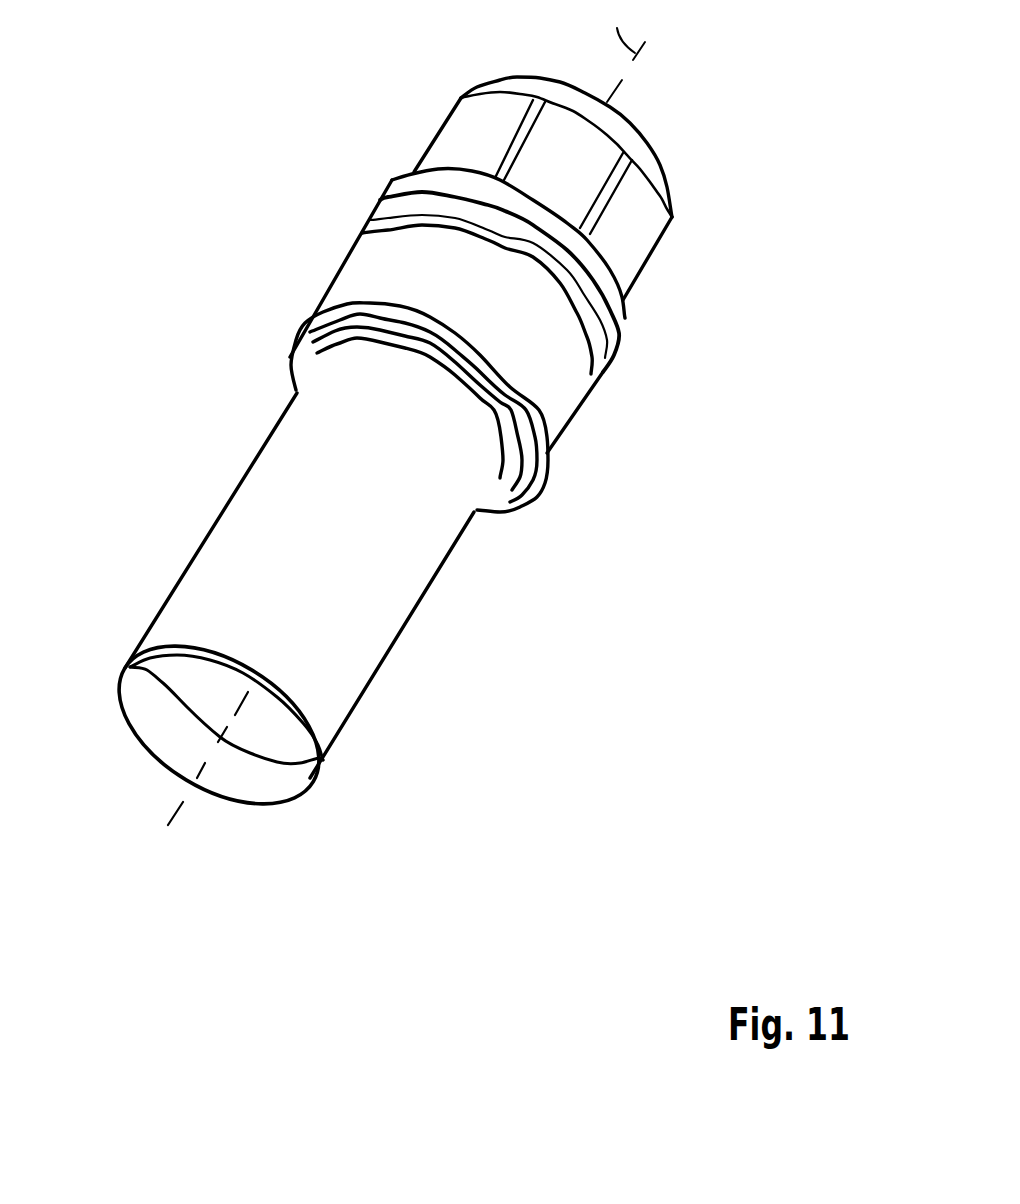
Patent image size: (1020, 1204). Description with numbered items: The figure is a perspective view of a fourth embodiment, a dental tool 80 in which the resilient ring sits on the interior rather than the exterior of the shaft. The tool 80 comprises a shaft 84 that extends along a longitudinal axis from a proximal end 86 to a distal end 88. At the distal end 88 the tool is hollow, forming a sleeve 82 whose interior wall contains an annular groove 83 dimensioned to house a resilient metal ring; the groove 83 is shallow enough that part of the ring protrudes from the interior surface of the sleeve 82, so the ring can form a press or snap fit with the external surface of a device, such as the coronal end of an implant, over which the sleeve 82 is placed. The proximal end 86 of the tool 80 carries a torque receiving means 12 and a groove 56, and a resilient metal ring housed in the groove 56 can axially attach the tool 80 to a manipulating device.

The dental tool 80 is at (213, 185).
The proximal end 86 is at (667, 153).
The torque receiving means 12 is at (713, 235).
The groove 56 is at (600, 370).
The shaft 84 is at (468, 542).
The distal end 88 is at (287, 805).
The sleeve 82 is at (158, 735).
The annular groove 83 is at (233, 753).